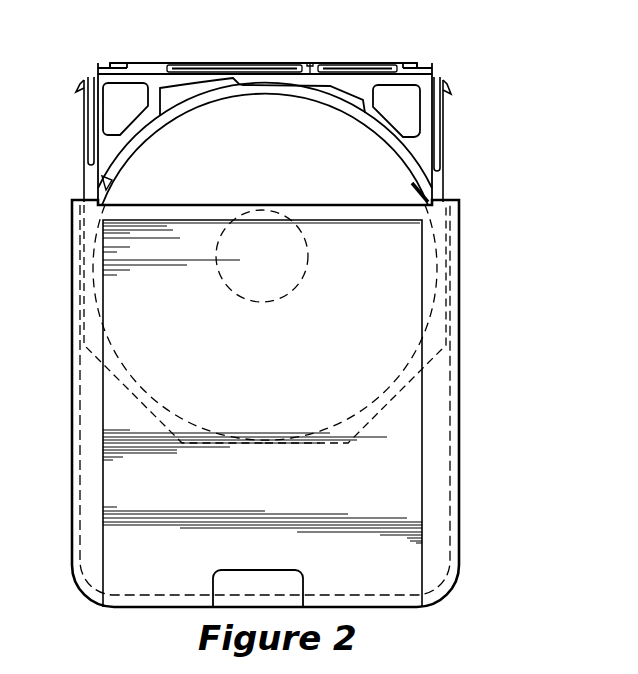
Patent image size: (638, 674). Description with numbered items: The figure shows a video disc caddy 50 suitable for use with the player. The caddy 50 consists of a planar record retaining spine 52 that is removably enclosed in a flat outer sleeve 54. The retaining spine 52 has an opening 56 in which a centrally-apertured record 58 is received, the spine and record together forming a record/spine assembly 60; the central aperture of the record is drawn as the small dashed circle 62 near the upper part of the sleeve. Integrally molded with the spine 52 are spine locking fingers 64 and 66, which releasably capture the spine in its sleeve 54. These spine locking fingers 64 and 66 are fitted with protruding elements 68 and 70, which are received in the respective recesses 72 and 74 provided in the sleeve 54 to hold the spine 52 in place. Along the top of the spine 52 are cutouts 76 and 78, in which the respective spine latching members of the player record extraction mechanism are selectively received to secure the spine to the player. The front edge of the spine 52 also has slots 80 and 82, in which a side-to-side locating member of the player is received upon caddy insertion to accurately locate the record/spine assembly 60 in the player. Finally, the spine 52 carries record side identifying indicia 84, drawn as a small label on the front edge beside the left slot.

The caddy 50 is at (508, 184).
The record retaining spine 52 is at (183, 75).
The outer sleeve 54 is at (415, 472).
The opening 56 is at (412, 170).
The record 58 is at (113, 188).
The record/spine assembly 60 is at (455, 68).
The hub opening 62 is at (309, 242).
The spine locking finger 64 is at (85, 136).
The spine locking finger 66 is at (440, 145).
The protruding element 68 is at (80, 94).
The protruding element 70 is at (447, 96).
The recess 72 is at (82, 228).
The recess 74 is at (444, 236).
The cutout 76 is at (125, 66).
The cutout 78 is at (409, 64).
The slot 80 is at (227, 72).
The slot 82 is at (310, 62).
The record side identifying indicia 84 is at (143, 64).